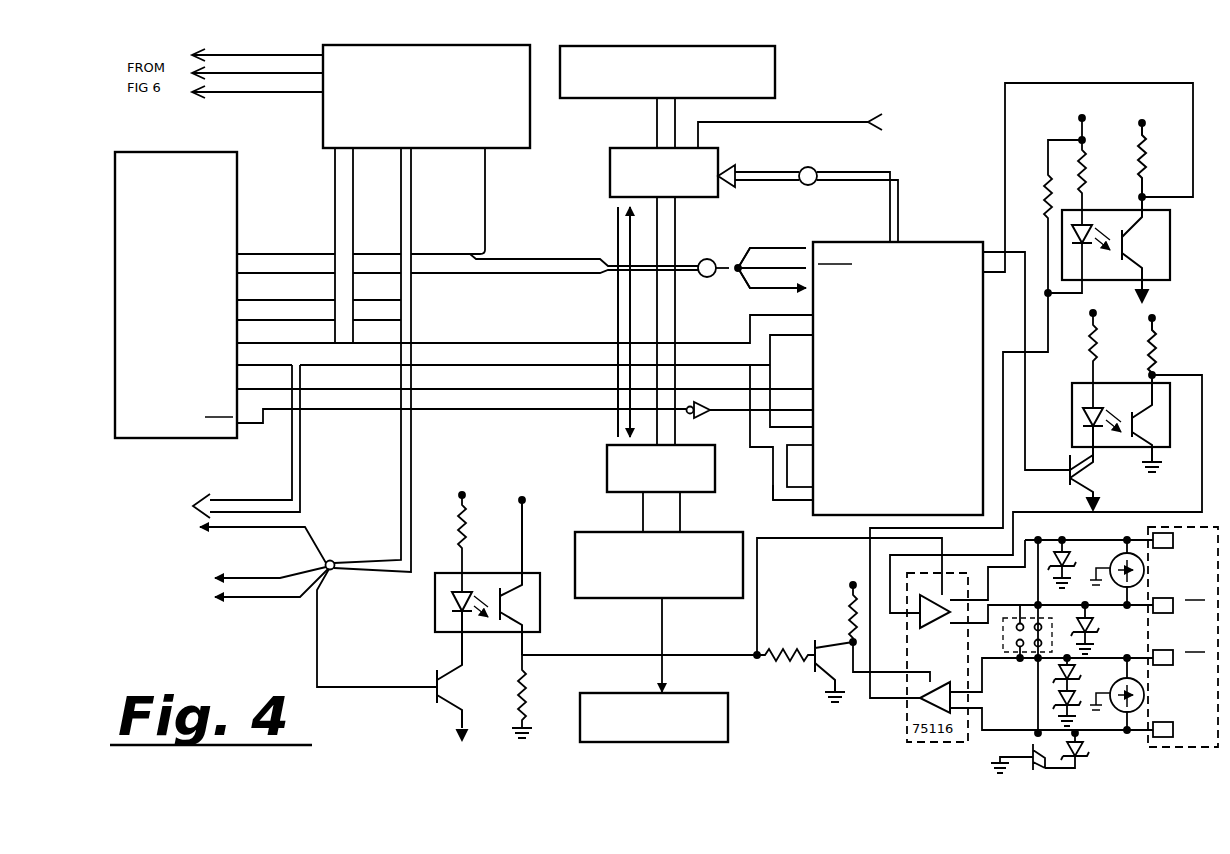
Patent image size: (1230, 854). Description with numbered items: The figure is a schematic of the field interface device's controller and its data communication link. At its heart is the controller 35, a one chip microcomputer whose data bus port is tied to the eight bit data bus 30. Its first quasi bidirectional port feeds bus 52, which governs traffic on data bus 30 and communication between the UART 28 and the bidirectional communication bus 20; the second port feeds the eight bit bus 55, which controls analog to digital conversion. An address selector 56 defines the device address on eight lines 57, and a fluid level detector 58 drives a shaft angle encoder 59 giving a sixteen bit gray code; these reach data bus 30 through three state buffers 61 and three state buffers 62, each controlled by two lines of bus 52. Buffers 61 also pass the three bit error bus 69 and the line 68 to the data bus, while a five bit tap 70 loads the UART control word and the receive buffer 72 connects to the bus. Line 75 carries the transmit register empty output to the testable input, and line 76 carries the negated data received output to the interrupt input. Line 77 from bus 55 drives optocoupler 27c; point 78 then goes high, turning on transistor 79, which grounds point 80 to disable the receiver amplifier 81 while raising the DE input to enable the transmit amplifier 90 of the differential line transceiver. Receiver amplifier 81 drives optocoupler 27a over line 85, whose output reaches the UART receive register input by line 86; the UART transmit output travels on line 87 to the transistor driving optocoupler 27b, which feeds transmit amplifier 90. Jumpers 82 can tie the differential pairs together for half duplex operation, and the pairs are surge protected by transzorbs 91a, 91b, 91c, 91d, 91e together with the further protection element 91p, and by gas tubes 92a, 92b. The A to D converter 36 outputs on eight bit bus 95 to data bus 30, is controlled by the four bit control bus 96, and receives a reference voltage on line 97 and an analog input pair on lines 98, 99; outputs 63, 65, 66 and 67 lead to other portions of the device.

The bidirectional communication bus 20 is at (1183, 748).
The optocoupler 27a is at (1105, 210).
The optocoupler 27b is at (1118, 383).
The optocoupler 27c is at (435, 608).
The UART 28 is at (940, 242).
The data bus 30 is at (527, 343).
The controller 35 is at (160, 440).
The A to D converter 36 is at (510, 150).
The bus 52 is at (312, 254).
The eight bit bus 55 is at (312, 300).
The address selector 56 is at (775, 83).
The address lines 57 is at (657, 135).
The fluid level detector 58 is at (728, 718).
The shaft angle encoder 59 is at (715, 532).
The three state buffers 61 is at (610, 182).
The three state buffers 62 is at (698, 445).
The output bus to FIG 5 63 is at (268, 500).
The line 65 is at (240, 535).
The output line to FIG 6 66 is at (276, 578).
The output line to FIG 6 67 is at (276, 597).
The line 68 is at (818, 122).
The three bit bus 69 is at (866, 172).
The five bit tap 70 is at (773, 485).
The buffered port 72 is at (808, 450).
The line 75 is at (530, 389).
The line 76 is at (548, 409).
The line 77 is at (320, 650).
The point 78 is at (757, 660).
The transistor 79 is at (815, 648).
The point 80 is at (850, 625).
The receiver amplifier 81 is at (930, 703).
The jumpers 82 is at (1003, 636).
The line 85 is at (1010, 352).
The line 86 is at (1005, 147).
The line 87 is at (993, 252).
The transmit amplifier 90 is at (925, 630).
The transzorb 91a is at (1075, 535).
The transzorb 91b is at (1097, 628).
The transzorb 91c is at (1058, 672).
The transzorb 91d is at (1060, 705).
The transzorb 91e is at (1086, 757).
The protection transistor 91p is at (1010, 752).
The gas tube 92a is at (1120, 537).
The gas tube 92b is at (1112, 690).
The eight bit bus 95 is at (335, 198).
The four bit control bus 96 is at (412, 205).
The line 97 is at (246, 55).
The line 98 is at (267, 92).
The line 99 is at (303, 92).